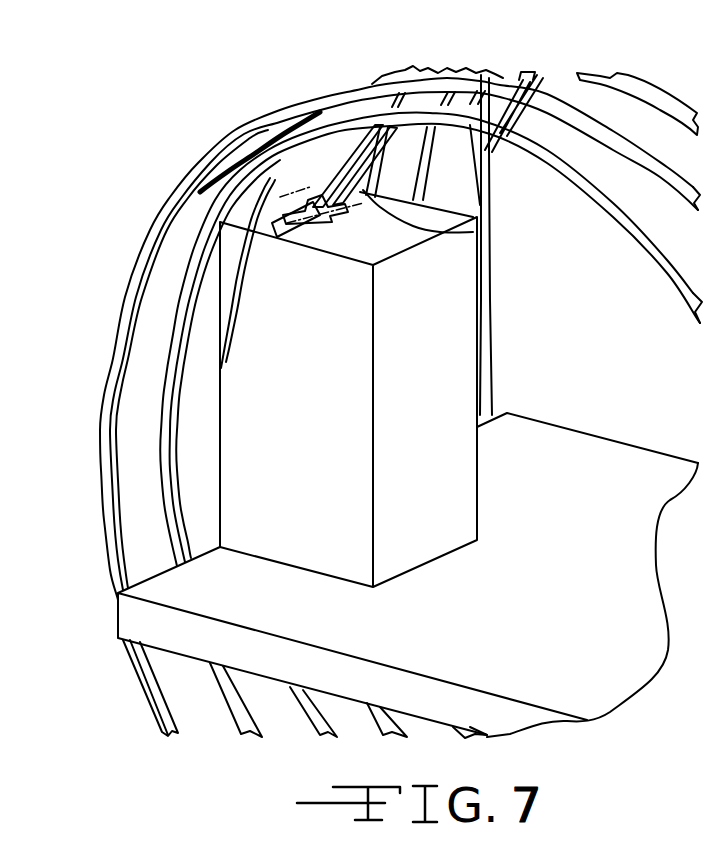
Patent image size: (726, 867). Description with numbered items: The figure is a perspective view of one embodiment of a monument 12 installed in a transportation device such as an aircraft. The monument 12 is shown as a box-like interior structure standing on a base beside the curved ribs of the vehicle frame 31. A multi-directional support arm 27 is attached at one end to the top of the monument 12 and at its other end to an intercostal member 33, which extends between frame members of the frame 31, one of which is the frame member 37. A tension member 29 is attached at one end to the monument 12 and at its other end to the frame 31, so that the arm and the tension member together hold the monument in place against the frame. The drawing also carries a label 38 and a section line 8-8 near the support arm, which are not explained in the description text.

The monument 12 is at (250, 398).
The multi-directional support arm 27 is at (295, 212).
The tension member 29 is at (483, 240).
The frame 31 is at (467, 133).
The intercostal member 33 is at (298, 192).
The frame member 37 is at (352, 172).
The arm 38 is at (303, 157).
The section line 8-8 is at (267, 257).